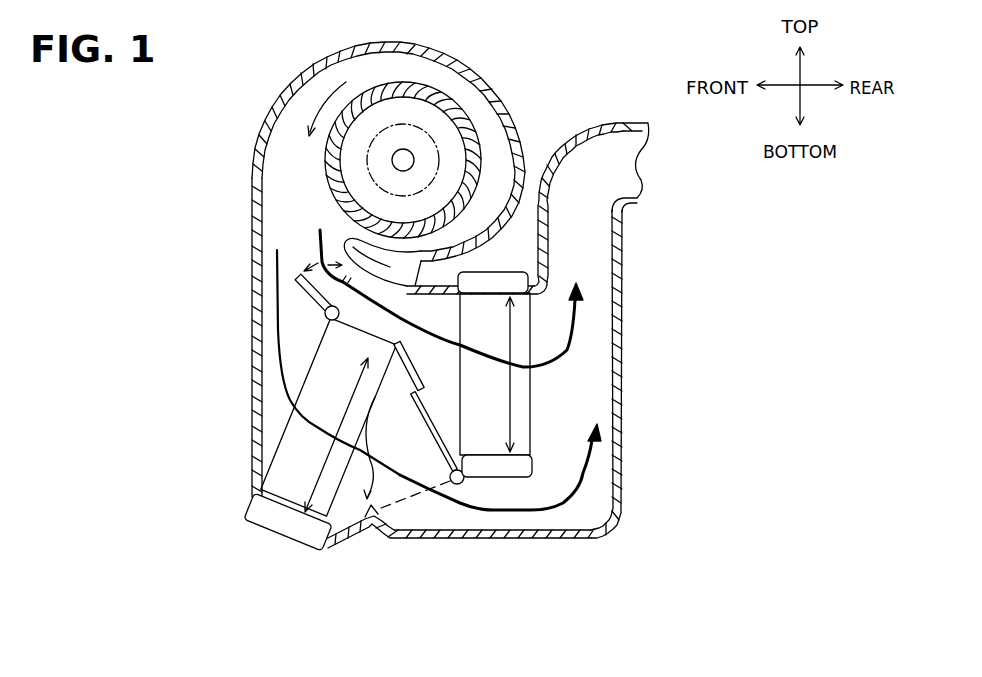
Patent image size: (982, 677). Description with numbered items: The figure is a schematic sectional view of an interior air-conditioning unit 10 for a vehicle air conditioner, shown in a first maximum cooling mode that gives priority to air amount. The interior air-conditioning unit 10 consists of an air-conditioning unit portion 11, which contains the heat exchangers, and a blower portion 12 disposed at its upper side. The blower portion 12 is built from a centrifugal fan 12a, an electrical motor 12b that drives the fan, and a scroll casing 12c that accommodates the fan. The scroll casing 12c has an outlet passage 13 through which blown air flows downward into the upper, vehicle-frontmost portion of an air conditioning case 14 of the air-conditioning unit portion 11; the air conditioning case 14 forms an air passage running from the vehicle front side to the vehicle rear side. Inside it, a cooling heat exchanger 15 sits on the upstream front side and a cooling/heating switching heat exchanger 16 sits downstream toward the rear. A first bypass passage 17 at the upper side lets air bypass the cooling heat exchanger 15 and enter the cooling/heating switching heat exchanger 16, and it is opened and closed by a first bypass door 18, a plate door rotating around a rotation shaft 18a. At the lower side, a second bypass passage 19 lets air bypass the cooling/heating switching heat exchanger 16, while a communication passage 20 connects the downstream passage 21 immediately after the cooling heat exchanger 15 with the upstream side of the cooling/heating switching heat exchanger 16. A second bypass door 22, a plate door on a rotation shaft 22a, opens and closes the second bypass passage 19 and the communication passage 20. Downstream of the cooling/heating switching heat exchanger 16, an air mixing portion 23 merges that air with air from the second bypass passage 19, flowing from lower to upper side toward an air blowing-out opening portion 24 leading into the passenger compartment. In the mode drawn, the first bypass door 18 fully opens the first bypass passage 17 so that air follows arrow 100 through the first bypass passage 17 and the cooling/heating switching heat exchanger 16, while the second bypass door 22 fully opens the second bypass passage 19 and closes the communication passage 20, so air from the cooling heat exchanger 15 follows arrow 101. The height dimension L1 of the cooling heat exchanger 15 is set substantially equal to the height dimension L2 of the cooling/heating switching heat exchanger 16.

The interior air-conditioning unit 10 is at (240, 257).
The air-conditioning unit portion 11 is at (485, 546).
The blower portion 12 is at (476, 55).
The centrifugal fan 12a is at (415, 82).
The electrical motor 12b is at (430, 136).
The scroll casing 12c is at (285, 87).
The outlet passage 13 is at (297, 232).
The air conditioning case 14 is at (560, 538).
The cooling heat exchanger 15 is at (270, 443).
The cooling/heating switching heat exchanger 16 is at (545, 391).
The first bypass passage 17 is at (388, 302).
The first bypass door 18 is at (297, 278).
The rotation shaft 18a is at (325, 314).
The second bypass passage 19 is at (441, 407).
The communication passage 20 is at (478, 518).
The downstream passage 21 is at (372, 530).
The second bypass door 22 is at (376, 512).
The rotation shaft 22a is at (430, 495).
The air mixing portion 23 is at (588, 320).
The air blowing-out opening portion 24 is at (628, 150).
The arrow 100 is at (583, 353).
The arrow 101 is at (600, 472).
The height dimension L1 is at (317, 472).
The height dimension L2 is at (532, 415).